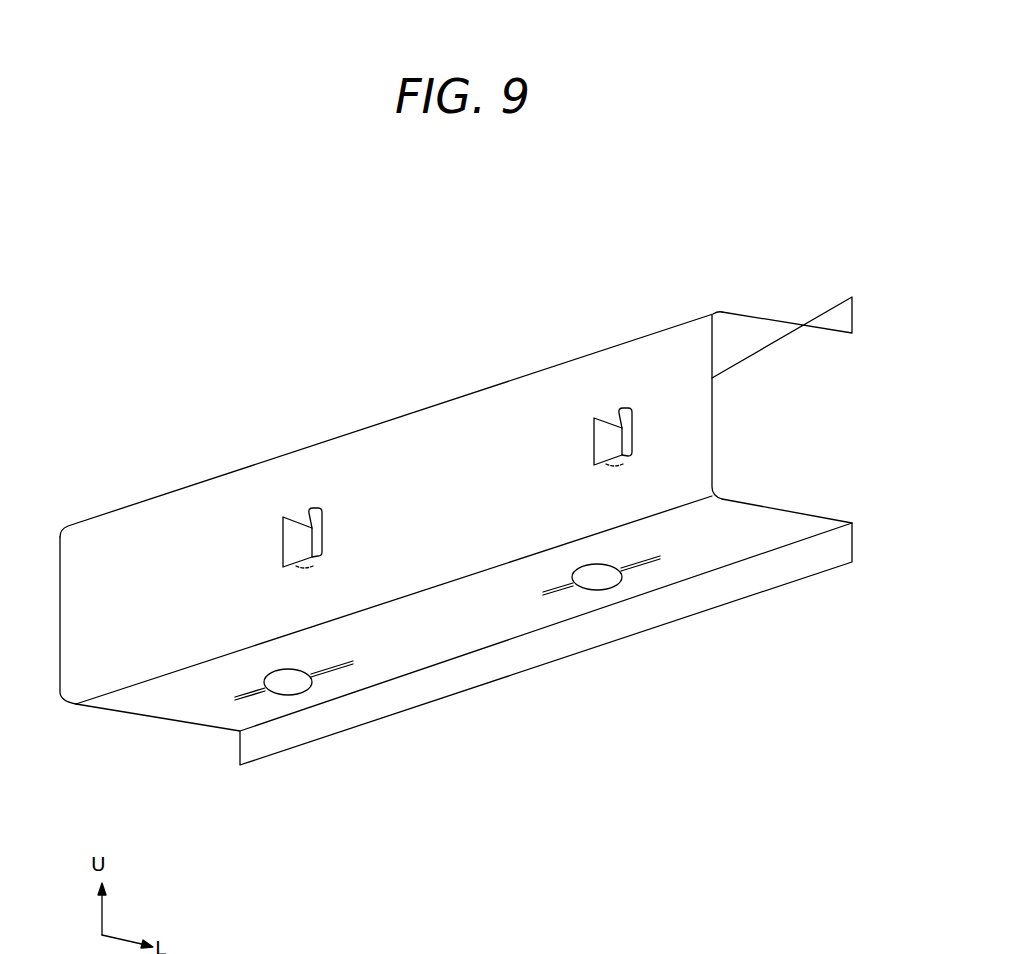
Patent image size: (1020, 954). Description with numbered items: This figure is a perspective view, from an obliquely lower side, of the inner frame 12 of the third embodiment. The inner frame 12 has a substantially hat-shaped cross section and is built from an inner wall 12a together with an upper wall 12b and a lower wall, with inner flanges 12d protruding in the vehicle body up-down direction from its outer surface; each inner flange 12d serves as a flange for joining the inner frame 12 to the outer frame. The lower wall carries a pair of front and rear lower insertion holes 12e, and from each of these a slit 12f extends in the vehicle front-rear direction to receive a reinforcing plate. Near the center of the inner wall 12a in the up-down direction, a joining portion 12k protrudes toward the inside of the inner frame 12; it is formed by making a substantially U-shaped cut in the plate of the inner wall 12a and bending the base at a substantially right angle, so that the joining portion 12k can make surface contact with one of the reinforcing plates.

The inner frame 12 is at (394, 421).
The inner wall 12a is at (98, 545).
The upper wall 12b is at (743, 316).
The inner flange 12d is at (518, 658).
The lower insertion hole 12e is at (293, 697).
The slit 12f is at (640, 567).
The joining portion 12k is at (305, 510).